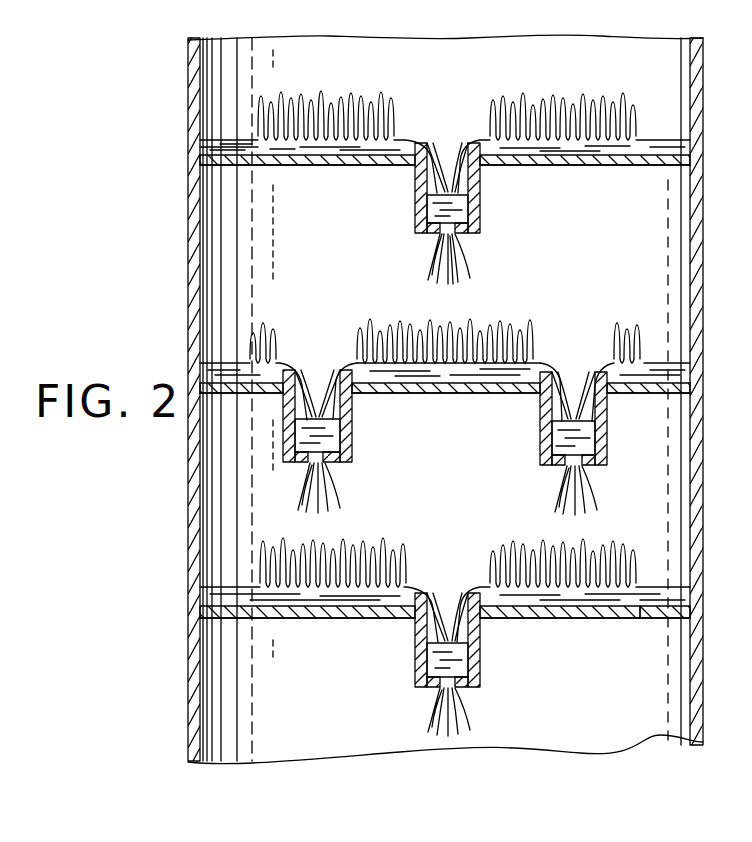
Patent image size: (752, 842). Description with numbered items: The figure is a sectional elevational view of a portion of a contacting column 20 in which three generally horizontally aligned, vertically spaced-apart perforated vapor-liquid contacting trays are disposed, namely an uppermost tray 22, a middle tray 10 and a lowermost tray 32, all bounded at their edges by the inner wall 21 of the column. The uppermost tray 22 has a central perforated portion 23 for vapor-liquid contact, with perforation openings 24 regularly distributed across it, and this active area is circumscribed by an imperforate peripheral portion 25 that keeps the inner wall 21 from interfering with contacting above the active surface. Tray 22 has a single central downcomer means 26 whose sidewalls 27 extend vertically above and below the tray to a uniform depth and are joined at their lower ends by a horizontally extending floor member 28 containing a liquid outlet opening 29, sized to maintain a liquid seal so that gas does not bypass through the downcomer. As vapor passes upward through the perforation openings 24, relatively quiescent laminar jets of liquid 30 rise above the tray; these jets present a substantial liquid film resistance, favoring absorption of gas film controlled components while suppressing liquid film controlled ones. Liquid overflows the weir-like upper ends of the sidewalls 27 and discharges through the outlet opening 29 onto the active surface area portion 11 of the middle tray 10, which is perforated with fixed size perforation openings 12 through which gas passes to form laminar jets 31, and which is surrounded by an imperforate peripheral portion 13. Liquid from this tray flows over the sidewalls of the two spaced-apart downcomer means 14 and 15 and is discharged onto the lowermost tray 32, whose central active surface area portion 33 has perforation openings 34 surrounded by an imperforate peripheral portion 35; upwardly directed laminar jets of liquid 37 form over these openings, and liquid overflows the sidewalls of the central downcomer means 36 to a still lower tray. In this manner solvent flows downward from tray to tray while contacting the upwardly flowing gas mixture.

The middle tray 10 is at (666, 397).
The active surface area portion 11 is at (498, 396).
The perforation openings 12 is at (421, 396).
The imperforate peripheral portion 13 is at (250, 395).
The downcomer means 14 is at (353, 448).
The downcomer means 15 is at (606, 440).
The contacting column 20 is at (186, 254).
The inner wall 21 is at (689, 275).
The uppermost tray 22 is at (668, 172).
The central perforated portion 23 is at (552, 168).
The perforation openings 24 is at (371, 167).
The imperforate peripheral portion 25 is at (241, 161).
The downcomer means 26 is at (414, 220).
The sidewalls 27 is at (481, 210).
The floor member 28 is at (470, 236).
The liquid outlet opening 29 is at (431, 243).
The laminar jets of liquid 30 is at (633, 110).
The laminar jets 31 is at (538, 336).
The lowermost tray 32 is at (664, 619).
The active surface area portion 33 is at (545, 619).
The perforation openings 34 is at (578, 619).
The imperforate peripheral portion 35 is at (235, 619).
The downcomer means 36 is at (480, 673).
The laminar jets of liquid 37 is at (630, 562).